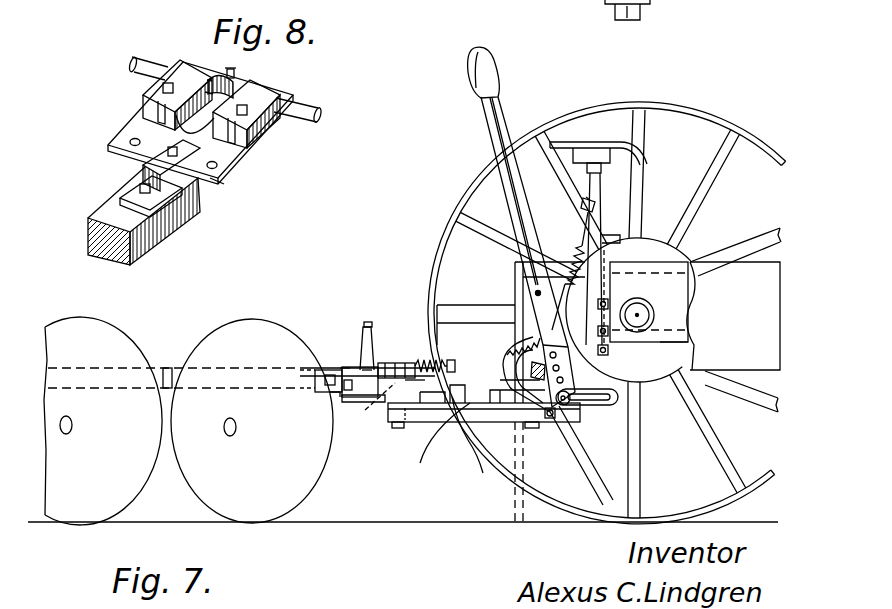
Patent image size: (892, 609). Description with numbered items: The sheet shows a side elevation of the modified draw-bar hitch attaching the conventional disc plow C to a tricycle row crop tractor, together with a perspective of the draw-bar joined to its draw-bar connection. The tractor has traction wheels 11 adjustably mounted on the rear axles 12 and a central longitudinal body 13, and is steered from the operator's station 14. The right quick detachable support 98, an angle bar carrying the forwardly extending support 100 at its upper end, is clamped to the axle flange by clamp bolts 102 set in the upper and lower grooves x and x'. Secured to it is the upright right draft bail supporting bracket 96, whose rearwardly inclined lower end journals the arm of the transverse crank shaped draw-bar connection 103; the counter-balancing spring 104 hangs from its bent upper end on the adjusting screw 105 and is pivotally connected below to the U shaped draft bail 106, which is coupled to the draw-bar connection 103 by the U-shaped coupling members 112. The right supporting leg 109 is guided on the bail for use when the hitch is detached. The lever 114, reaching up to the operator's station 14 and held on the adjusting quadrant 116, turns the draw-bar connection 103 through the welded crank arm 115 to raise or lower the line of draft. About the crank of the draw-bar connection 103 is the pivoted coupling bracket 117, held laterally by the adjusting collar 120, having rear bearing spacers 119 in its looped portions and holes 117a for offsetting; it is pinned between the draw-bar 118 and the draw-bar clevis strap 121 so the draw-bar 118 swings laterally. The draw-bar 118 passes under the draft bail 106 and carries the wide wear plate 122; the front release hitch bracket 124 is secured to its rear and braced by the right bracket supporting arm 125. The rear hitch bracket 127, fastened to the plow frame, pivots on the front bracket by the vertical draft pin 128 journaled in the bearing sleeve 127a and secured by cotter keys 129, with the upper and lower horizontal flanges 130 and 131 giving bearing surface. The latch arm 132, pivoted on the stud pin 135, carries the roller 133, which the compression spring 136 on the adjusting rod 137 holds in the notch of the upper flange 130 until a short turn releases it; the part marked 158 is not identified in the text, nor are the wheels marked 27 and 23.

In FIG. 8, the draw-bar 118 is at (162, 220).
In FIG. 7, the draw-bar 118 is at (440, 424).
In FIG. 8, the coupling bracket 117 is at (265, 94).
In FIG. 8, the holes 117a is at (215, 173).
In FIG. 8, the draw-bar clevis strap 121 is at (140, 175).
In FIG. 8, the draw-bar connection 103 is at (322, 113).
In FIG. 7, the draw-bar connection 103 is at (578, 403).
In FIG. 8, the adjusting collar 120 is at (235, 76).
In FIG. 8, the rear bearing spacers 119 is at (270, 122).
In FIG. 7, the rear axles 12 is at (642, 12).
In FIG. 7, the wheel 27 is at (120, 498).
In FIG. 7, the wheel 23 is at (320, 473).
In FIG. 7, the disc plow C is at (165, 368).
In FIG. 7, the rear hitch bracket 127 is at (358, 367).
In FIG. 7, the bearing sleeve 127a is at (340, 368).
In FIG. 7, the draft pin 128 is at (366, 322).
In FIG. 7, the cotter keys 129 is at (360, 343).
In FIG. 7, the lower horizontal flange 131 is at (332, 392).
In FIG. 7, the upper horizontal flange 130 is at (388, 305).
In FIG. 7, the roller 133 is at (380, 362).
In FIG. 7, the adjusting rod 137 is at (452, 368).
In FIG. 7, the compression spring 136 is at (433, 356).
In FIG. 7, the latch arm 132 is at (430, 337).
In FIG. 7, the stud pin 135 is at (433, 278).
In FIG. 7, the wear plate 122 is at (412, 420).
In FIG. 7, the right bracket supporting arm 125 is at (388, 420).
In FIG. 7, the front release hitch bracket 124 is at (378, 460).
In FIG. 7, the right supporting leg 109 is at (515, 283).
In FIG. 7, the traction wheels 11 is at (690, 117).
In FIG. 7, the upper groove x is at (637, 305).
In FIG. 7, the lower groove x' is at (677, 355).
In FIG. 7, the crank arm 115 is at (610, 369).
In FIG. 7, the right quick detachable support 98 is at (608, 284).
In FIG. 7, the clamp bolts 102 is at (692, 282).
In FIG. 7, the central longitudinal body 13 is at (742, 372).
In FIG. 7, the operator's station 14 is at (594, 152).
In FIG. 7, the right draft bail supporting bracket 96 is at (598, 222).
In FIG. 7, the forwardly extending support 100 is at (622, 258).
In FIG. 7, the adjusting screw 105 is at (583, 205).
In FIG. 7, the counter-balancing spring 104 is at (568, 258).
In FIG. 7, the lever 114 is at (492, 132).
In FIG. 7, the adjusting quadrant 116 is at (510, 402).
In FIG. 7, the draft bail 106 is at (545, 378).
In FIG. 7, the U-shaped coupling members 112 is at (603, 406).
In FIG. 7, the curved bar 158 is at (478, 470).